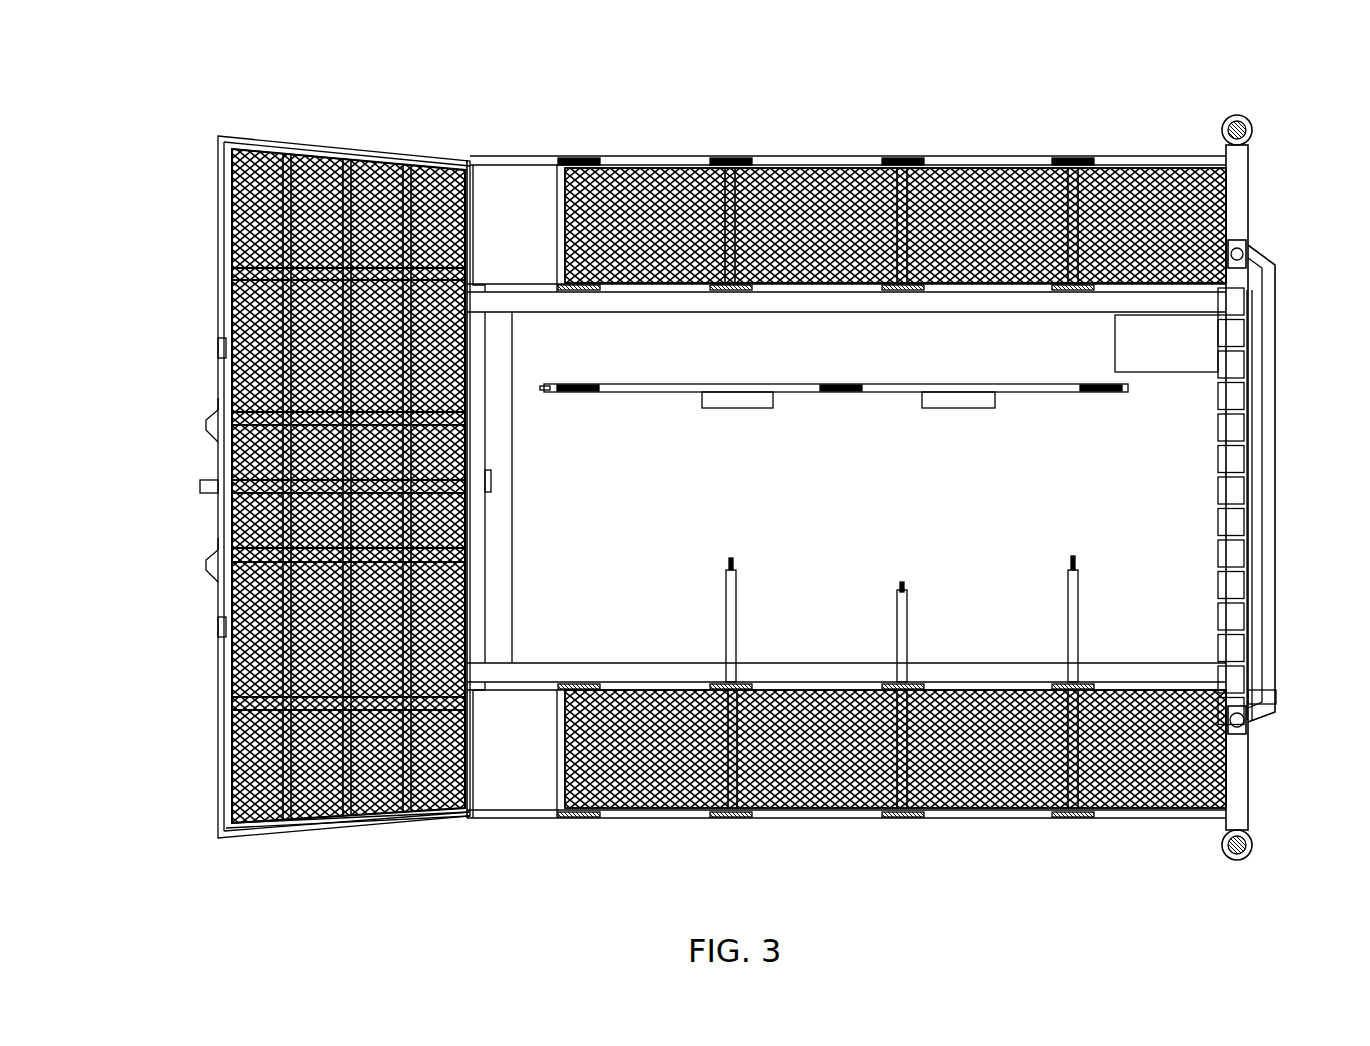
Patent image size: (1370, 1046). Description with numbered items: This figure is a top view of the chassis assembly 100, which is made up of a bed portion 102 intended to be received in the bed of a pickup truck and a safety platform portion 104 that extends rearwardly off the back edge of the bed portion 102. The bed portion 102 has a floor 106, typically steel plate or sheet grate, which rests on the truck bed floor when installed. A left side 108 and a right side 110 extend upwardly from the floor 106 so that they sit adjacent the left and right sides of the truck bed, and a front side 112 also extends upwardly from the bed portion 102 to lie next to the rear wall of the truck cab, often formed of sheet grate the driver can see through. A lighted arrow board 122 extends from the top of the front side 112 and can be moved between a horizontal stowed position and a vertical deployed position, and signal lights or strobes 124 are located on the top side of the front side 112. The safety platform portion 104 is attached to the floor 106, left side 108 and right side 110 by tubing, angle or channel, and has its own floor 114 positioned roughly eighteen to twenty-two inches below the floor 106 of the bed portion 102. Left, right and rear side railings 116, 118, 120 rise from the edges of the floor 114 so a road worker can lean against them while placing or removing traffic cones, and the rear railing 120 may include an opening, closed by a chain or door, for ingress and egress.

The chassis assembly 100 is at (158, 74).
The bed portion 102 is at (902, 94).
The safety platform portion 104 is at (300, 127).
The floor 106 is at (958, 572).
The left side 108 is at (670, 290).
The right side 110 is at (680, 672).
The front side 112 is at (1240, 200).
The floor 114 is at (330, 790).
The left side railing 116 is at (388, 160).
The right side railing 118 is at (412, 820).
The rear side railing 120 is at (222, 693).
The lighted arrow board 122 is at (1262, 420).
The signal lights or strobes 124 is at (1240, 115).